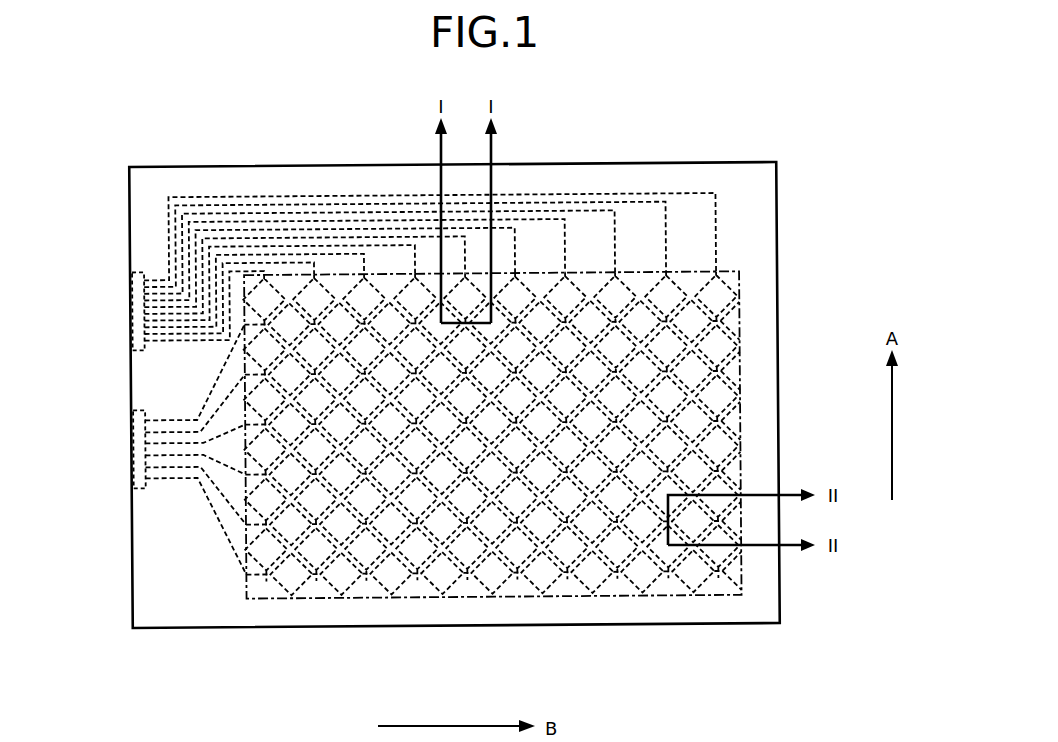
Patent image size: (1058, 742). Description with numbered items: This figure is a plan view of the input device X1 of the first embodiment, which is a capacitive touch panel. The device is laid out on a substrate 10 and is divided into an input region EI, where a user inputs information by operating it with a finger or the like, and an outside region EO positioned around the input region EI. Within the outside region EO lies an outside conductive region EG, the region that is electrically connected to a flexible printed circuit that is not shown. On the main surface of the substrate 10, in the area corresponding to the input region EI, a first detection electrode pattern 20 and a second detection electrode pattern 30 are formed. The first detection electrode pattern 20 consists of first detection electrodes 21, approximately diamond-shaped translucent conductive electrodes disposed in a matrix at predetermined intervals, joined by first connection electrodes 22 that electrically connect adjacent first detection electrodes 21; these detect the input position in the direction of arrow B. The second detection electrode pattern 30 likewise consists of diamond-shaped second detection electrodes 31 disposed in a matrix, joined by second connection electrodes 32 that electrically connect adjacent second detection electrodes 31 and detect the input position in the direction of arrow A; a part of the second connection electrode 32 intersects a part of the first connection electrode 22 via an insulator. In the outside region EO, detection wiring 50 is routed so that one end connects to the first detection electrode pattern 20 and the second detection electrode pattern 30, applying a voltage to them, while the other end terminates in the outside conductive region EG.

The substrate 10 is at (131, 563).
The first detection electrode pattern 20 is at (561, 490).
The first detection electrode 21 is at (735, 292).
The first connection electrode 22 is at (735, 320).
The second detection electrode pattern 30 is at (493, 490).
The second detection electrode 31 is at (290, 597).
The second connection electrode 32 is at (317, 580).
The detection wiring 50 is at (717, 224).
The outside conductive region EG is at (122, 451).
The input region EI is at (468, 598).
The outside region EO is at (575, 180).
The input device X1 is at (760, 105).